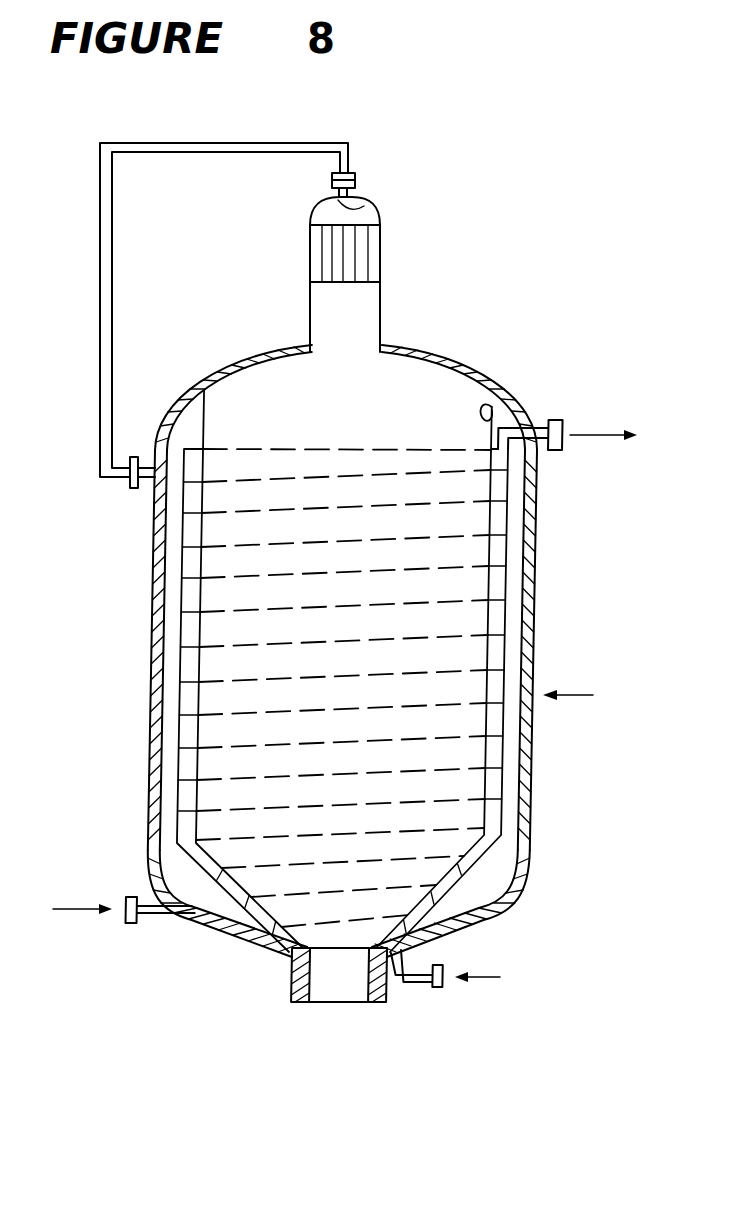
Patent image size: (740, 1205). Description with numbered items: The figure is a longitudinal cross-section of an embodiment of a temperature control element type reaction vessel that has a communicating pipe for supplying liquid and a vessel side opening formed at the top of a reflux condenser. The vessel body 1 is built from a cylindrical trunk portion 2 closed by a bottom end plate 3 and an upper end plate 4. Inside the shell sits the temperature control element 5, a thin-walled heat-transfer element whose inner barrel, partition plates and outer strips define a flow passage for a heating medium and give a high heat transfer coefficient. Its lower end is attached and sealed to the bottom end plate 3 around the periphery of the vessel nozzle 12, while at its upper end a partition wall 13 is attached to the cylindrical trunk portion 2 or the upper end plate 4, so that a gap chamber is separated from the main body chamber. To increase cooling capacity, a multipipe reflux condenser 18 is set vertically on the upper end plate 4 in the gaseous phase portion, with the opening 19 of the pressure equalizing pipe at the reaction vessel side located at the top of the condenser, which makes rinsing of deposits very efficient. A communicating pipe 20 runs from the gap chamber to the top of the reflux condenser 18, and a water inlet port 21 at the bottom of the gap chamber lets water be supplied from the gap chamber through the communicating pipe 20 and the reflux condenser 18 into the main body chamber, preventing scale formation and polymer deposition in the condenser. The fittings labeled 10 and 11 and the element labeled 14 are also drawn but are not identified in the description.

The vessel body 1 is at (581, 694).
The cylindrical trunk portion 2 is at (530, 766).
The bottom end plate 3 is at (493, 908).
The upper end plate 4 is at (457, 364).
The temperature control element 5 is at (507, 617).
The inlet pipe 10 is at (443, 988).
The outlet pipe 11 is at (560, 422).
The vessel nozzle 12 is at (374, 996).
The partition wall 13 is at (484, 393).
The inner vessel liner 14 is at (174, 738).
The reflux condenser 18 is at (381, 258).
The opening of the pressure equalizing pipe 19 is at (362, 212).
The communicating pipe 20 is at (113, 227).
The water inlet port 21 is at (147, 923).